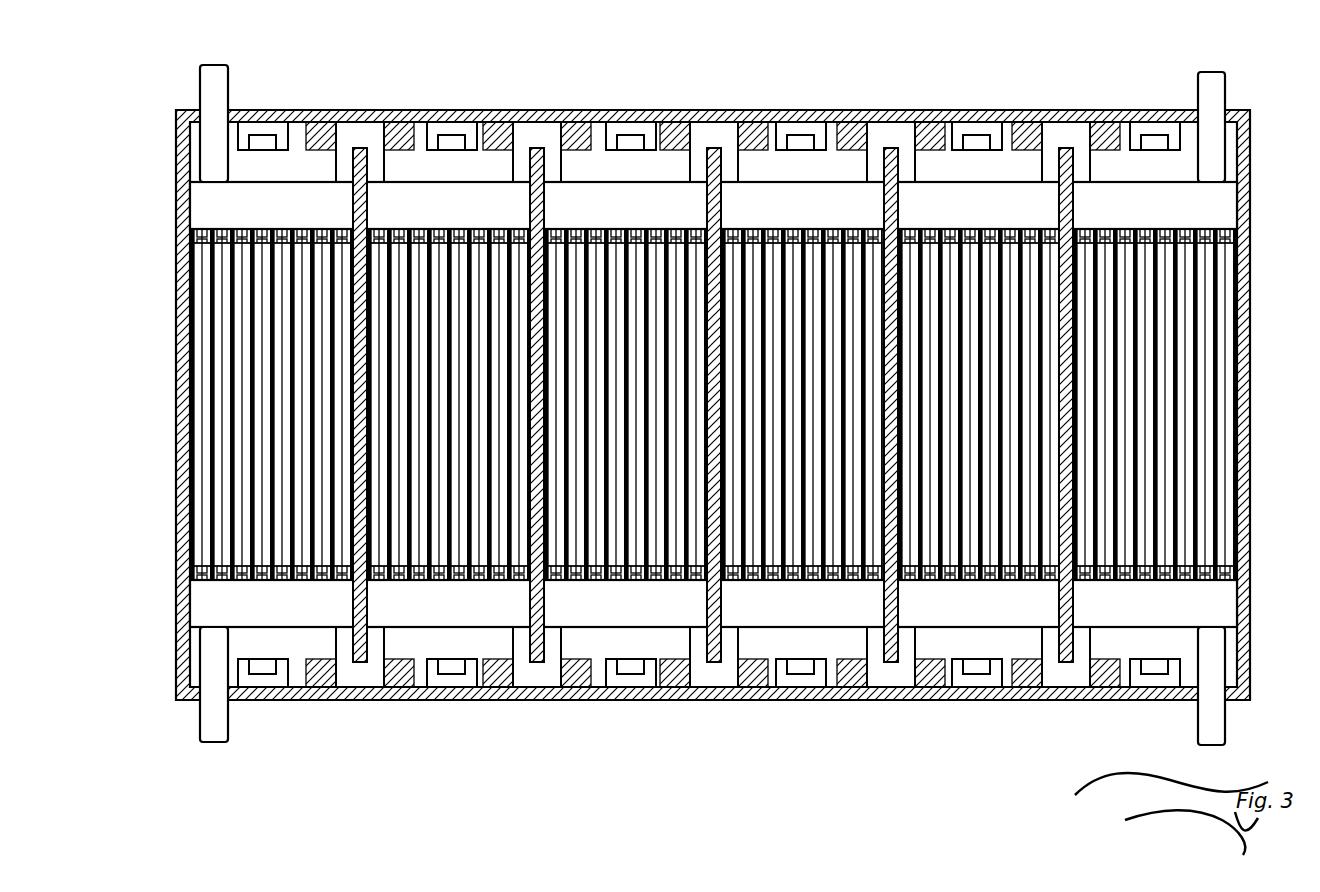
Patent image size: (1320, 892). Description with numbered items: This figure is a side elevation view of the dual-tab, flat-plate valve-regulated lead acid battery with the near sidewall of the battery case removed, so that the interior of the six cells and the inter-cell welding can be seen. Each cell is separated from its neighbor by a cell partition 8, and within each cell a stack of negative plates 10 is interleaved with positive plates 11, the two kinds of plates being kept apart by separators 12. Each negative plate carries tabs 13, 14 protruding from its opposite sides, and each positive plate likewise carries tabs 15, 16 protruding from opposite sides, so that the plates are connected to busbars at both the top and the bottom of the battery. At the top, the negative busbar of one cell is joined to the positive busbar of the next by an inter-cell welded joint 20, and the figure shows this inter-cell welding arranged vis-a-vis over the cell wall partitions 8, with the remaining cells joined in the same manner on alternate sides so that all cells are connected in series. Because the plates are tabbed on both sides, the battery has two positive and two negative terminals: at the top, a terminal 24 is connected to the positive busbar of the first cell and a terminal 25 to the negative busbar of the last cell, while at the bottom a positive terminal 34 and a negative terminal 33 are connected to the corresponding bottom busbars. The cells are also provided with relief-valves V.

The cell partitions 8 is at (713, 155).
The negative plates 10 is at (545, 568).
The positive plates 11 is at (742, 568).
The separators 12 is at (907, 568).
The tab 13 is at (197, 570).
The tab 14 is at (203, 247).
The tab 15 is at (208, 560).
The tab 16 is at (207, 268).
The welded joint 20 is at (537, 133).
The terminal 24 is at (213, 78).
The terminal 25 is at (1213, 83).
The negative terminal 33 is at (1213, 723).
The positive terminal 34 is at (213, 723).
The relief-valves V is at (447, 668).